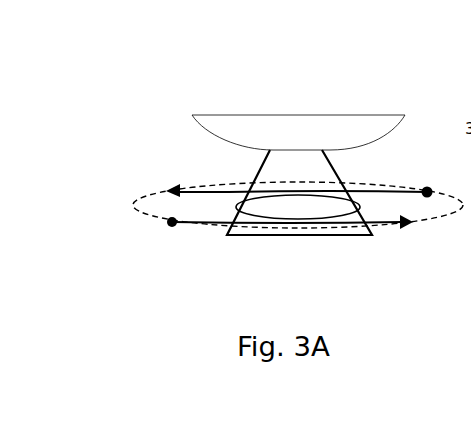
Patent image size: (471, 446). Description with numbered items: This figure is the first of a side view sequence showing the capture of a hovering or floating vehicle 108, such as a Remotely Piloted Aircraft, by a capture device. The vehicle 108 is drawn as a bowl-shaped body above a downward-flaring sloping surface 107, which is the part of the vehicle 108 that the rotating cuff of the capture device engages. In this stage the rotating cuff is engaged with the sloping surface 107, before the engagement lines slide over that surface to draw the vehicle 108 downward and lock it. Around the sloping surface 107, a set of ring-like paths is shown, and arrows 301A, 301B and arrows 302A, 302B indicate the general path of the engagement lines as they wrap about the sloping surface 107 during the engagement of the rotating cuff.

The sloping surface 107 is at (262, 172).
The vehicle 108 is at (318, 136).
The arrow 301A is at (170, 223).
The arrow 301B is at (168, 190).
The arrow 302A is at (427, 190).
The arrow 302B is at (407, 228).